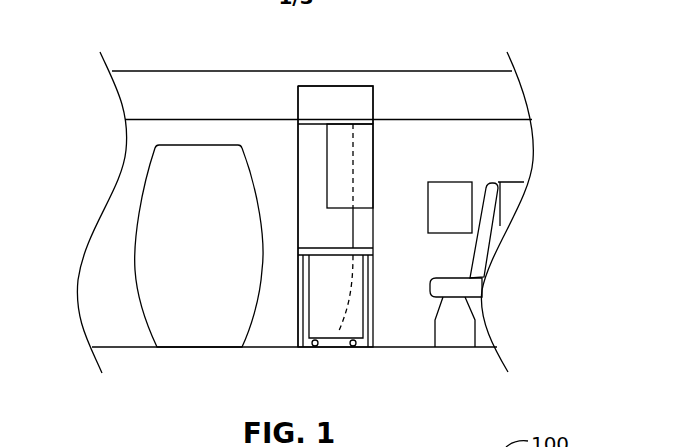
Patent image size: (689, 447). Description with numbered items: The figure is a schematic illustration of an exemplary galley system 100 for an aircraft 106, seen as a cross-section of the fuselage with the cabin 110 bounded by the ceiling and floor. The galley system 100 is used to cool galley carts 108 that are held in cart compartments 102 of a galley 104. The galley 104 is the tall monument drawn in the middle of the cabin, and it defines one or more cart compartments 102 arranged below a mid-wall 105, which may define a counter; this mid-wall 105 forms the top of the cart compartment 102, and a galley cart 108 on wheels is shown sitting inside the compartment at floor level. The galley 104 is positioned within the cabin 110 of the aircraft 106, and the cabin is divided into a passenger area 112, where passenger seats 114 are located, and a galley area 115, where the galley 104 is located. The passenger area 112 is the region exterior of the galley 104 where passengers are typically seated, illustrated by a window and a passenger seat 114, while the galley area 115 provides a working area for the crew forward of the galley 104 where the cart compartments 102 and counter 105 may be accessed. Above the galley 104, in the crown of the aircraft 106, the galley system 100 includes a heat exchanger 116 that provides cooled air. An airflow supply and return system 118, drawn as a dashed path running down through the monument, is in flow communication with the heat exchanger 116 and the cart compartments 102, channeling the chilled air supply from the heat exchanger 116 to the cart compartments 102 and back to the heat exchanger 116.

The galley system 100 is at (342, 30).
The cart compartment 102 is at (369, 350).
The galley 104 is at (294, 254).
The mid-wall 105 is at (333, 248).
The aircraft 106 is at (197, 66).
The galley cart 108 is at (329, 328).
The cabin 110 is at (459, 151).
The passenger area 112 is at (508, 152).
The passenger seat 114 is at (480, 260).
The galley area 115 is at (319, 148).
The heat exchanger 116 is at (351, 80).
The airflow supply and return system 118 is at (359, 232).